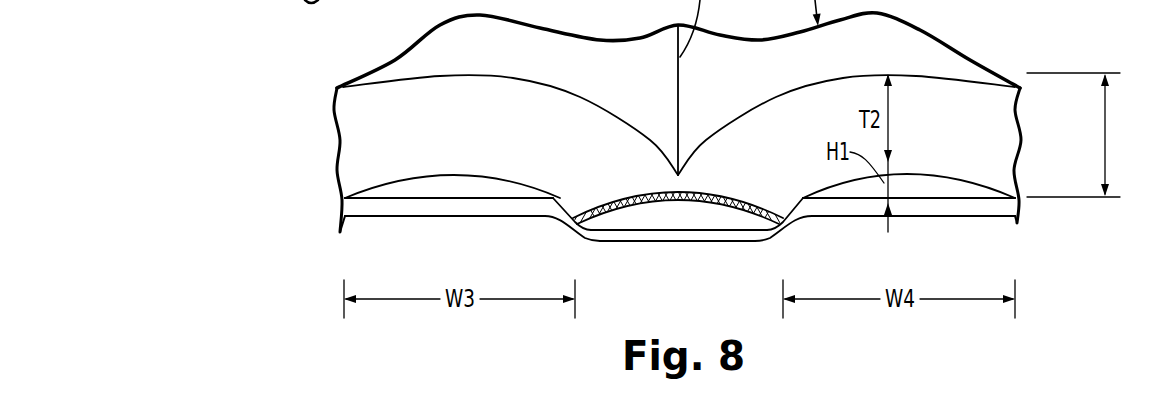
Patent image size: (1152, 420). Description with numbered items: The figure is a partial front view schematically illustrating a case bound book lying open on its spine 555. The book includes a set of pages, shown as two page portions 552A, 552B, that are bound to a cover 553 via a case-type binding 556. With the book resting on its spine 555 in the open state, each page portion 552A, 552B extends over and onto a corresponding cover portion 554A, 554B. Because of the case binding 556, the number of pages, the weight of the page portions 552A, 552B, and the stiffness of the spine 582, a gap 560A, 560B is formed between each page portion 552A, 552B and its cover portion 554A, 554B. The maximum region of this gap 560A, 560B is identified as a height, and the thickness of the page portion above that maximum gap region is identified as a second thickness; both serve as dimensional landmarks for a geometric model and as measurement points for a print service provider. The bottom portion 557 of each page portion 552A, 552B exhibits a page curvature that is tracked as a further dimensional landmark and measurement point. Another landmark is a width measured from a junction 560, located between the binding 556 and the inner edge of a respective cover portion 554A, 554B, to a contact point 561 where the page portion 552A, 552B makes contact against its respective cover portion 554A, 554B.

The cover 553 is at (565, 73).
The page portion 552A is at (438, 135).
The page portion 552B is at (915, 135).
The bottom portion 557 is at (403, 180).
The junction 560 is at (568, 186).
The gap 560A is at (416, 200).
The gap 560B is at (941, 208).
The cover portion 554A is at (508, 218).
The cover portion 554B is at (852, 218).
The contact point 561 is at (334, 214).
The spine 582 is at (681, 214).
The case-type binding 556 is at (628, 208).
The spine 555 is at (741, 242).